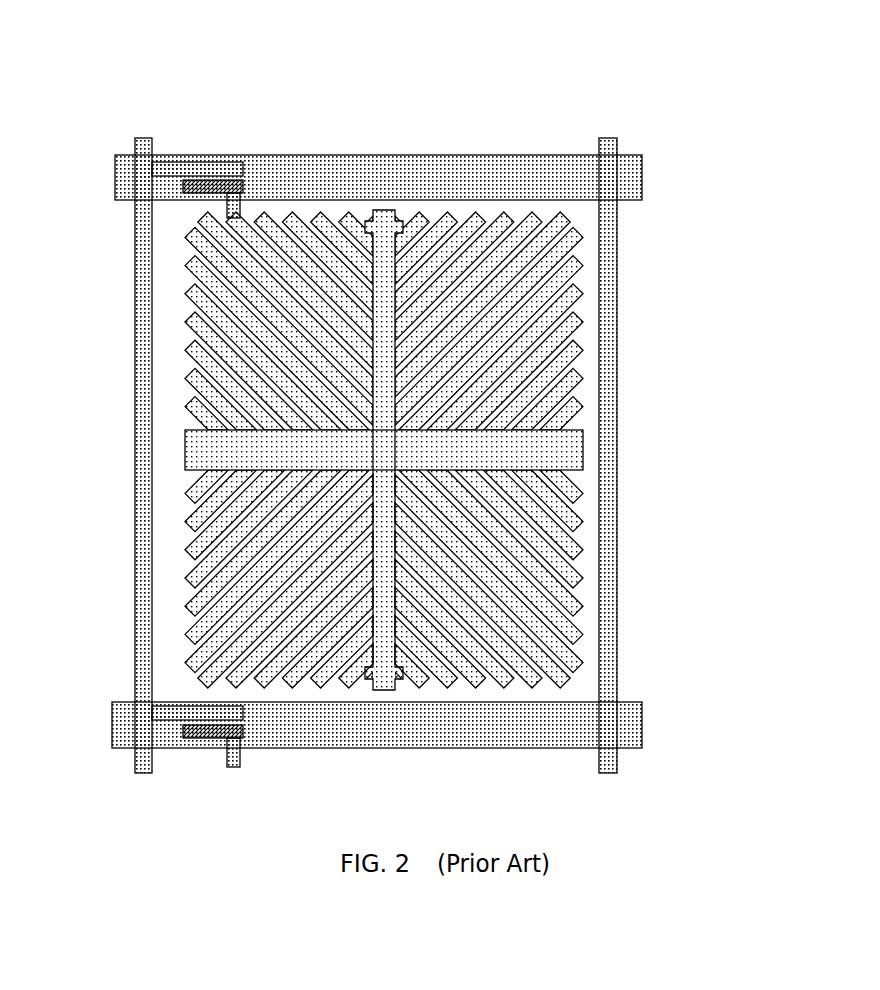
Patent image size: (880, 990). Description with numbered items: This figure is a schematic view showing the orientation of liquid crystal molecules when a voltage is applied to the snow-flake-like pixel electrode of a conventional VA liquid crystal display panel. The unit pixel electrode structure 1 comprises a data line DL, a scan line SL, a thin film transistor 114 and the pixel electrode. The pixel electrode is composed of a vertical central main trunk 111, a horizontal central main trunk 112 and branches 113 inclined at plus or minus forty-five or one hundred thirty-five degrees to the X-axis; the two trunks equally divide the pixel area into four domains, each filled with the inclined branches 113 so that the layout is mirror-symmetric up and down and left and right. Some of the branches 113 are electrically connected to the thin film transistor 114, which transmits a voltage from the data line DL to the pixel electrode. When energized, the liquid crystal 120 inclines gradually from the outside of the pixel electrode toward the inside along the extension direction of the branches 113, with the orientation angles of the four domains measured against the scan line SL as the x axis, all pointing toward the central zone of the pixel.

The unit pixel electrode structure 1 is at (407, 408).
The vertical central main trunk 111 is at (398, 210).
The horizontal central main trunk 112 is at (583, 432).
The branches 113 is at (580, 311).
The thin film transistor 114 is at (218, 182).
The liquid crystal 120 is at (443, 406).
The data line DL is at (137, 457).
The scan line SL is at (112, 702).